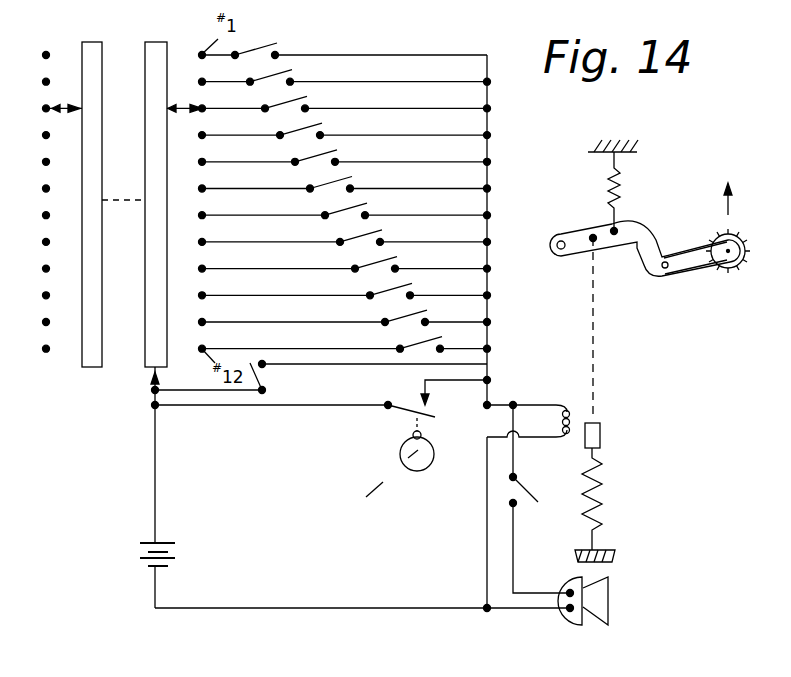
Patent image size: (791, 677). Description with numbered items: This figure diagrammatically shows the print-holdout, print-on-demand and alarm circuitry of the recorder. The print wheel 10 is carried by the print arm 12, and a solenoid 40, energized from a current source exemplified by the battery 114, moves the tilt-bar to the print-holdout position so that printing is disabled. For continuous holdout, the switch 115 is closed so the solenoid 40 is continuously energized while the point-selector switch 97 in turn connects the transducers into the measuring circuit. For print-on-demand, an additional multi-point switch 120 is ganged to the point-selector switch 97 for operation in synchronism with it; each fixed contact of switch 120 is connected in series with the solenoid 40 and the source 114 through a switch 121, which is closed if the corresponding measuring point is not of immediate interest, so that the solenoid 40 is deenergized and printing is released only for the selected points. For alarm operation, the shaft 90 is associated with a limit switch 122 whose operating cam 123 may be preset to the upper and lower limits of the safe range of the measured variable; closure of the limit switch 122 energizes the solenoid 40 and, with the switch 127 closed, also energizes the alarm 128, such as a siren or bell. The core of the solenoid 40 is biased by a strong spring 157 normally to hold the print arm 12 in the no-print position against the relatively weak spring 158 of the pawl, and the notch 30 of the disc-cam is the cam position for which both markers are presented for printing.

The point-selector switch 97 is at (119, 57).
The multi-point switch 120 is at (158, 44).
The switch 121 is at (267, 77).
The switch 115 is at (265, 378).
The limit switch 122 is at (408, 407).
The shaft 90 is at (392, 474).
The operating cam 123 is at (422, 462).
The battery 114 is at (174, 551).
The solenoid 40 is at (557, 425).
The switch 127 is at (543, 485).
The alarm 128 is at (608, 598).
The spring 157 is at (600, 490).
The spring 158 is at (628, 183).
The notch 30 is at (650, 223).
The print arm 12 is at (697, 262).
The print wheel 10 is at (742, 233).